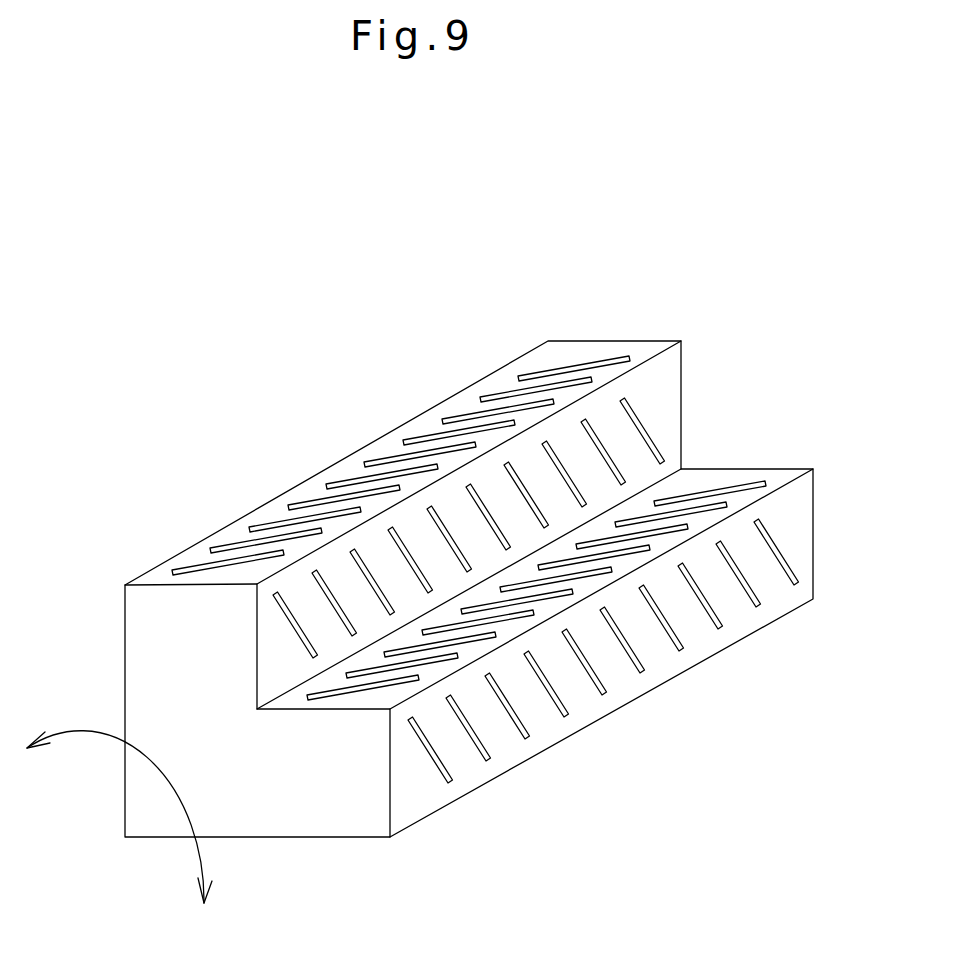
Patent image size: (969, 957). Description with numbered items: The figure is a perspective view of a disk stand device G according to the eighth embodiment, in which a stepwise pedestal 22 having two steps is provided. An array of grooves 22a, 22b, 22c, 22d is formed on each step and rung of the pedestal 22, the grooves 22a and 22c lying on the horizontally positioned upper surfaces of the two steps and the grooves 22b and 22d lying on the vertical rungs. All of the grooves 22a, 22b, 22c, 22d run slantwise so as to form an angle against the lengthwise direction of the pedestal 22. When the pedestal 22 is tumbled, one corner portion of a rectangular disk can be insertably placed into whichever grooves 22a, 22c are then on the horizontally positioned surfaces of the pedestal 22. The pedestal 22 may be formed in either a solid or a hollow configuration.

The disk stand device G is at (622, 317).
The stepwise pedestal 22 is at (801, 515).
The array of grooves 22a is at (263, 524).
The array of grooves 22b is at (618, 463).
The array of grooves 22c is at (722, 484).
The array of grooves 22d is at (524, 738).